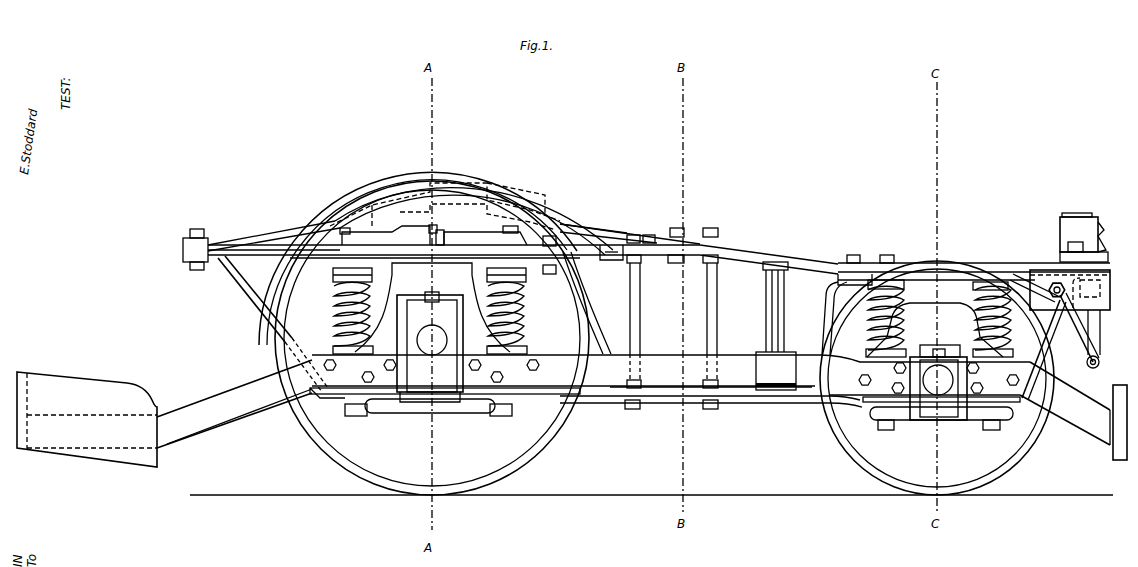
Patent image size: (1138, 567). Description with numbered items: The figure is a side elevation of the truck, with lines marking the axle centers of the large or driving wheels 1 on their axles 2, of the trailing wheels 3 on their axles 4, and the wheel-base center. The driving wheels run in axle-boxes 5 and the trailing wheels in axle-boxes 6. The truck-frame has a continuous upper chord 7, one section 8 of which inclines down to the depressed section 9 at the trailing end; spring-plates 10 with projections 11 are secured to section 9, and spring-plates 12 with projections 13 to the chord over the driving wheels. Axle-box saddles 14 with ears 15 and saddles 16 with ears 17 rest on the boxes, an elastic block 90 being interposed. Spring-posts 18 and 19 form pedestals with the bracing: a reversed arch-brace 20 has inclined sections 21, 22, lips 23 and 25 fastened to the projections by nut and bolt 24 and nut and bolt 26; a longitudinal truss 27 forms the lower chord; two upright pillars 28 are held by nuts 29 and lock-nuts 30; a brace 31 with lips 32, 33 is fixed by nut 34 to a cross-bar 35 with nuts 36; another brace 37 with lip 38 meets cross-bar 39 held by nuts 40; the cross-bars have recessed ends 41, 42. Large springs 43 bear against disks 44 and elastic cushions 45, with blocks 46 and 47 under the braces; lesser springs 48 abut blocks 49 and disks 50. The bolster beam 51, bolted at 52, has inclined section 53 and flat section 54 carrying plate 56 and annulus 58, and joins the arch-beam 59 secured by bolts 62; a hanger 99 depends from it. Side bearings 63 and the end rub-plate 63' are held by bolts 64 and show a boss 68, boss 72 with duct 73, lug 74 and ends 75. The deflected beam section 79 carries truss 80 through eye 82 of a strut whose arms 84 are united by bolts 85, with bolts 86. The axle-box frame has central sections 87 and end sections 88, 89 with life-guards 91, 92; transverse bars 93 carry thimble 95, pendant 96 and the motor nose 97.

The large or driving wheels 1 is at (480, 468).
The axles 2 is at (432, 340).
The trailing wheels 3 is at (937, 378).
The axles 4 is at (942, 370).
The axle-boxes 5 is at (430, 348).
The axle-boxes 6 is at (938, 382).
The upper chord 7 is at (332, 250).
The inclined section of upper chord 8 is at (770, 258).
The depressed section of upper chord 9 is at (968, 262).
The spring-plates 10 is at (1045, 232).
The projections 11 is at (856, 272).
The spring-plates 12 is at (326, 262).
The projections 13 is at (546, 279).
The axle-box saddles 14 is at (432, 282).
The ears or projections 15 is at (334, 348).
The axle-box saddles 16 is at (935, 330).
The ears or projections 17 is at (866, 352).
The spring-posts 18 is at (334, 300).
The spring-posts 19 is at (870, 312).
The reversed arch-brace 20 is at (748, 405).
The inclined section of arch-brace 21 is at (596, 295).
The inclined section of arch-brace 22 is at (826, 300).
The lips 23 is at (564, 268).
The nut and bolt 24 is at (590, 228).
The lip 25 is at (884, 275).
The nut and bolt 26 is at (851, 255).
The longitudinal truss 27 is at (662, 404).
The upright pillars 28 is at (724, 316).
The nuts 29 is at (646, 235).
The lock-nuts 30 is at (728, 381).
The brace 31 is at (256, 308).
The lip 32 is at (193, 274).
The lip 33 is at (347, 419).
The nut 34 is at (358, 416).
The cross-bar 35 is at (452, 413).
The nuts 36 is at (372, 414).
The brace 37 is at (1103, 369).
The lip 38 is at (1010, 408).
The cross-bar 39 is at (950, 420).
The nuts 40 is at (939, 432).
The recessed ends 41 is at (482, 418).
The recessed ends 42 is at (1004, 428).
The large axle-box springs 43 is at (336, 316).
The disks 44 is at (435, 268).
The elastic cushions 45 is at (429, 265).
The blocks or cushions 46 is at (324, 398).
The blocks or cushions 47 is at (1025, 396).
The springs 48 is at (900, 295).
The blocks or cushions 49 is at (890, 280).
The disks 50 is at (904, 280).
The bolster beam 51 is at (292, 210).
The bolts 52 is at (188, 238).
The inclined section 53 is at (272, 230).
The flat section 54 is at (506, 190).
The flat plate 56 is at (498, 182).
The annulus 58 is at (476, 174).
The arch-beam 59 is at (716, 235).
The bolts 62 is at (680, 228).
The side bearings 63 is at (386, 235).
The end rub-plate 63' is at (1079, 232).
The bolts 64 is at (348, 228).
The boss 68 is at (1068, 206).
The boss 72 is at (1102, 221).
The duct or channel 73 is at (432, 225).
The lip or lug 74 is at (620, 310).
The ends 75 is at (1100, 233).
The deflected section of beam 79 is at (1069, 294).
The truss 80 is at (1084, 336).
The eye 82 is at (1104, 358).
The arms 84 is at (1100, 327).
The bolts 85 is at (1087, 252).
The bolts 86 is at (1100, 290).
The central sections 87 is at (656, 358).
The end section 88 is at (234, 404).
The end section 89 is at (1092, 432).
The elastic block 90 is at (928, 342).
The life-guard 91 is at (87, 419).
The life-guard 92 is at (1112, 416).
The transverse bars 93 is at (766, 278).
The thimble 95 is at (778, 262).
The pendant 96 is at (785, 333).
The nose 97 is at (785, 315).
The hanger 99 is at (606, 244).